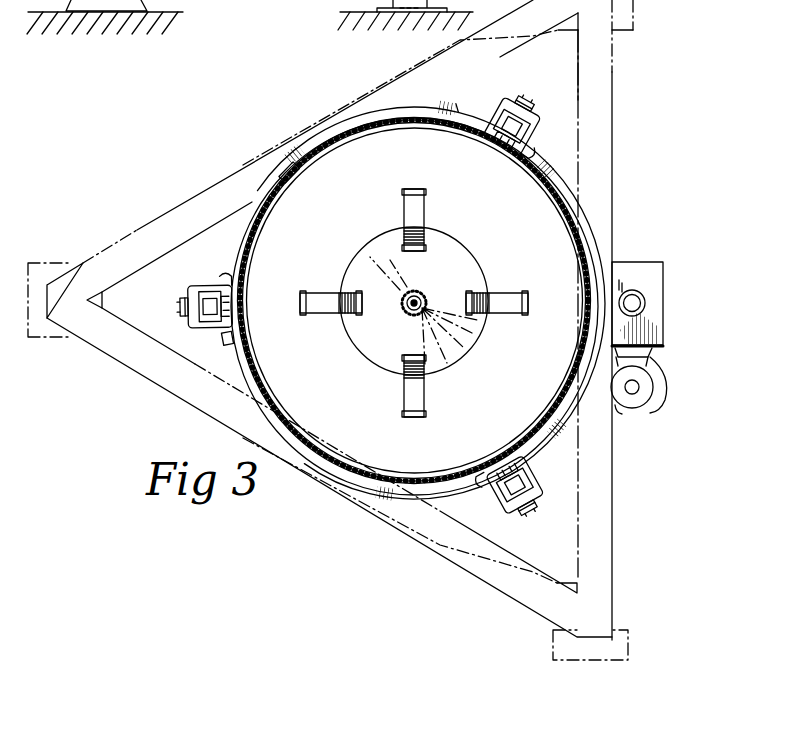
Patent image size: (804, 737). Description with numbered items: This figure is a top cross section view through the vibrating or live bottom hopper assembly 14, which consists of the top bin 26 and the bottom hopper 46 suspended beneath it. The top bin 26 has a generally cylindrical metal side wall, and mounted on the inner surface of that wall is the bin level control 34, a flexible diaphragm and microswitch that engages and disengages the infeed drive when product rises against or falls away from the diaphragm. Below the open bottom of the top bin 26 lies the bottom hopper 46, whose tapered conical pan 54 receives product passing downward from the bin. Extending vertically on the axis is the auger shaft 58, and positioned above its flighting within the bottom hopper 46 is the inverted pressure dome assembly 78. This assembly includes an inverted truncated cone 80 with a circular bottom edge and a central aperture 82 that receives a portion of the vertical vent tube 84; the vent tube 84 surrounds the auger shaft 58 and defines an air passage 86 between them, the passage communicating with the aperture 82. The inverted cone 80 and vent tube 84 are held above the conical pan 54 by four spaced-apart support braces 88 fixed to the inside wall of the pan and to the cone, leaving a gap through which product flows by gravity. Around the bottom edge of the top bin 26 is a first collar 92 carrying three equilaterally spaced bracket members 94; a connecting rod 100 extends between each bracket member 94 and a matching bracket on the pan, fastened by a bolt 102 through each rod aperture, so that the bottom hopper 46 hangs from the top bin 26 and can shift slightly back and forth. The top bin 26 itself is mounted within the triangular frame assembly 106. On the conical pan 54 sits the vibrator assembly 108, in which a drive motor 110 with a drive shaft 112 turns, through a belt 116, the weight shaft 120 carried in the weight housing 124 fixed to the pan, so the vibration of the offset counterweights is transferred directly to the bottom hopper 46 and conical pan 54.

The vibrating hopper assembly 14 is at (364, 302).
The top bin 26 is at (253, 187).
The bin level control 34 is at (310, 165).
The bottom hopper 46 is at (372, 447).
The conical pan 54 is at (415, 300).
The auger shaft 58 is at (405, 308).
The inverted pressure dome assembly 78 is at (353, 248).
The inverted truncated cone 80 is at (350, 265).
The central aperture 82 is at (400, 297).
The vertical vent tube 84 is at (423, 298).
The air passage 86 is at (413, 291).
The support braces 88 is at (405, 204).
The first collar 92 is at (548, 170).
The bracket members 94 is at (540, 125).
The connecting rod 100 is at (500, 106).
The bolt 102 is at (527, 94).
The triangular frame assembly 106 is at (133, 223).
The vibrator assembly 108 is at (667, 252).
The drive motor 110 is at (622, 418).
The drive shaft 112 is at (633, 393).
The belt 116 is at (650, 402).
The weight shaft 120 is at (644, 308).
The weight housing 124 is at (627, 262).